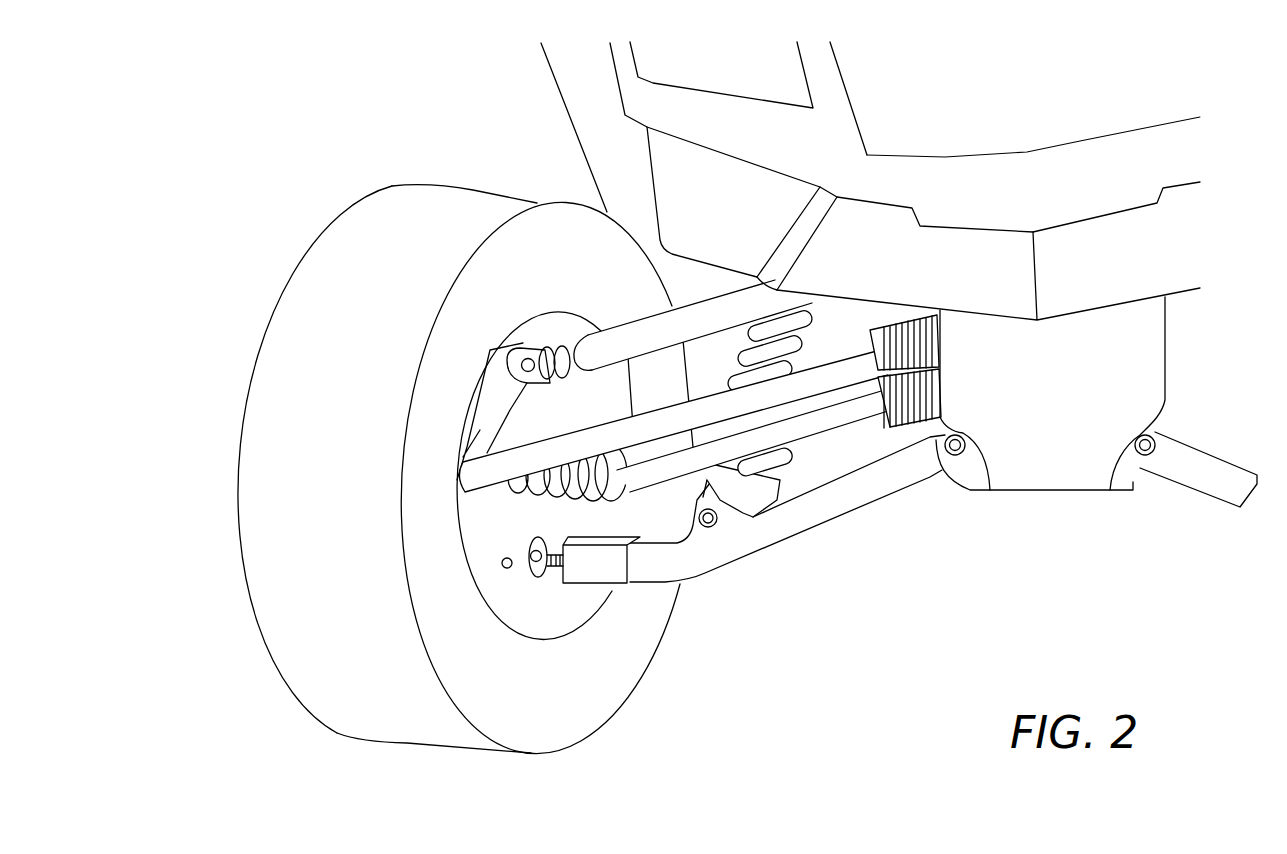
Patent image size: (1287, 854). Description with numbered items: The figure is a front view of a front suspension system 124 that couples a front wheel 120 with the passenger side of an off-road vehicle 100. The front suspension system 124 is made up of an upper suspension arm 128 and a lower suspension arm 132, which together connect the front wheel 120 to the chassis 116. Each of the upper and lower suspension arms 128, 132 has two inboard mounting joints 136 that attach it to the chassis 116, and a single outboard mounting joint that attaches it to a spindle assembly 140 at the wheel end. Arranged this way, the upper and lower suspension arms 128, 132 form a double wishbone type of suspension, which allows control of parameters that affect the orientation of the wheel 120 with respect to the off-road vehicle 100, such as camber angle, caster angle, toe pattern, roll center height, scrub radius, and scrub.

The off-road vehicle 100 is at (1023, 188).
The chassis 116 is at (1157, 378).
The front wheel 120 is at (300, 280).
The front suspension system 124 is at (762, 627).
The upper suspension arm 128 is at (633, 330).
The lower suspension arm 132 is at (810, 515).
The inboard mounting joints 136 is at (940, 455).
The spindle assembly 140 is at (513, 403).